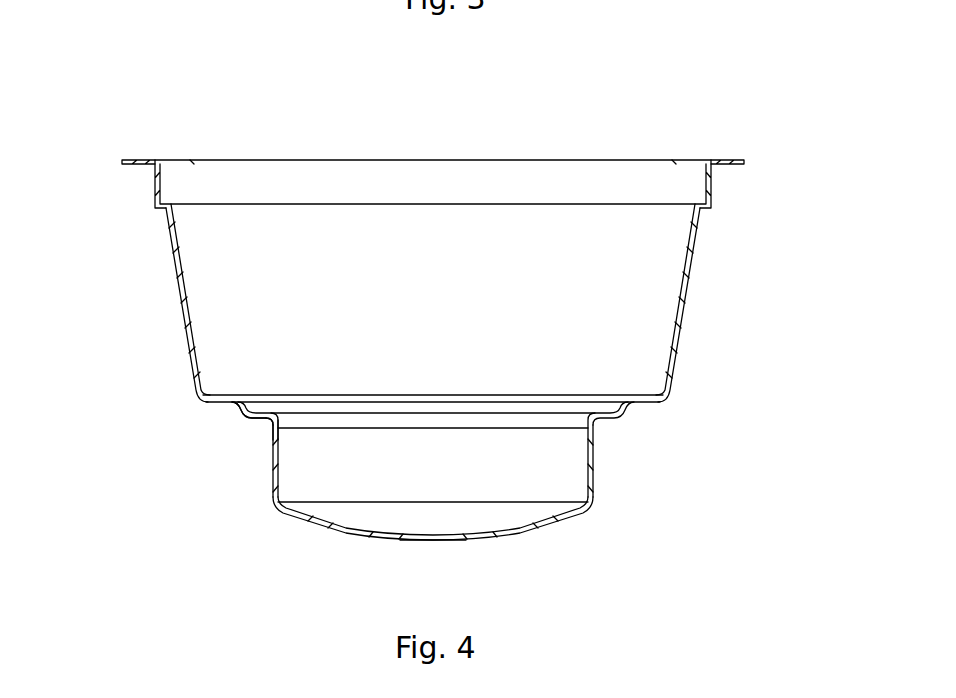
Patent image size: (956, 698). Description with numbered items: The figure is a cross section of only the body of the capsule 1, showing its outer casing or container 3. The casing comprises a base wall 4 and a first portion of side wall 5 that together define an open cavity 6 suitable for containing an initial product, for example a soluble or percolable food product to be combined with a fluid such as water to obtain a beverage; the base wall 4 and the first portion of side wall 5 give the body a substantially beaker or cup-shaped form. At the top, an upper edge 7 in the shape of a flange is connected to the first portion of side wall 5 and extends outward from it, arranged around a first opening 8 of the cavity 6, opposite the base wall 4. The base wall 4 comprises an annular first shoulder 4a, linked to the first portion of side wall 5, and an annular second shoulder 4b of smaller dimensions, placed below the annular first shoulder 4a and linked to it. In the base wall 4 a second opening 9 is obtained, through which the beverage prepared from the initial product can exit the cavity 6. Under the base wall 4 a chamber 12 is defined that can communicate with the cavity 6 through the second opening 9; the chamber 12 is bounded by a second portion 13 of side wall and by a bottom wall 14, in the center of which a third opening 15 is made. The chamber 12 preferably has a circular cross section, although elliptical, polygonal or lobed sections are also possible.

The capsule 1 is at (622, 104).
The outer casing or container 3 is at (139, 262).
The base wall 4 is at (226, 434).
The annular first shoulder 4a is at (205, 400).
The annular second shoulder 4b is at (263, 423).
The first portion of side wall 5 is at (688, 313).
The cavity 6 is at (441, 294).
The upper edge 7 is at (137, 160).
The first opening 8 is at (163, 160).
The second opening 9 is at (279, 412).
The chamber 12 is at (466, 482).
The second portion of side wall 13 is at (590, 463).
The bottom wall 14 is at (550, 525).
The third opening 15 is at (456, 538).